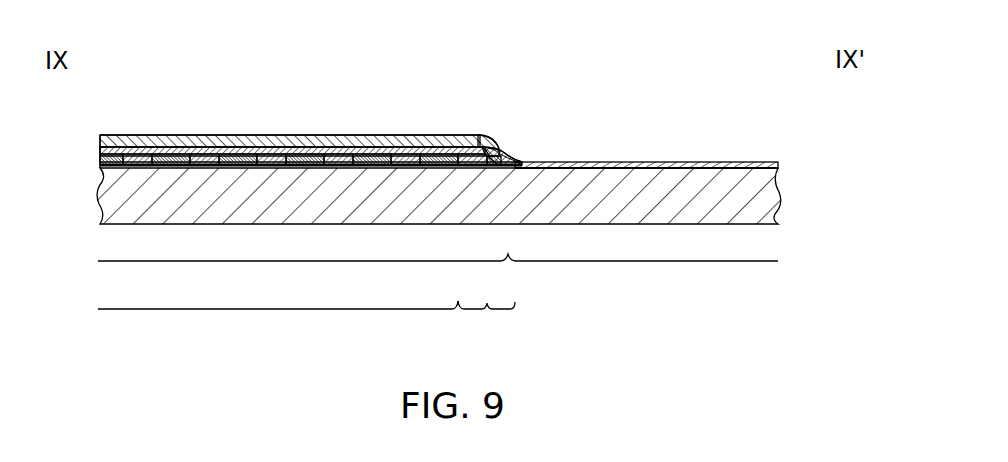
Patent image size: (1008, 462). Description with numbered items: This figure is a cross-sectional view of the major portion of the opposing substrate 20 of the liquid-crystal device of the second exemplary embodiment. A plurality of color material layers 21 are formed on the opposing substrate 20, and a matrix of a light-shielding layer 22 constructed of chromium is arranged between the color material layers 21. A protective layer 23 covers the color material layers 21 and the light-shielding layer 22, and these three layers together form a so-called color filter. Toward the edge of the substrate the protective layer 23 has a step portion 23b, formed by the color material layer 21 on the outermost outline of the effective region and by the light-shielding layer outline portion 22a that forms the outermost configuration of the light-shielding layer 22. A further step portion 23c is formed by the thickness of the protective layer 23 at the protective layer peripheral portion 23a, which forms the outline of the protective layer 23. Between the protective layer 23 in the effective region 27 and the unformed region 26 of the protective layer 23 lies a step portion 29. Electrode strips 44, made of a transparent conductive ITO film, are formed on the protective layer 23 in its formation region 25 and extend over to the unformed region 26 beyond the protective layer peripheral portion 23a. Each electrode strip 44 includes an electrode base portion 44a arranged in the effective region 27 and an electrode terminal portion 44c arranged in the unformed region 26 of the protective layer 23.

The opposing substrate 20 is at (757, 199).
The color material layer 21 is at (157, 136).
The light-shielding layer 22 is at (205, 135).
The light-shielding layer outline portion 22a is at (522, 140).
The protective layer 23 is at (410, 135).
The protective layer peripheral portion 23a is at (535, 135).
The step portion 23b is at (486, 135).
The step portion 23c is at (525, 163).
The formation region of the protective layer 25 is at (305, 262).
The unformed region 26 is at (652, 285).
The effective region 27 is at (267, 310).
The step portion 29 is at (486, 322).
The electrode strip 44 is at (786, 159).
The electrode base portion 44a is at (380, 135).
The electrode terminal portion 44c is at (688, 161).